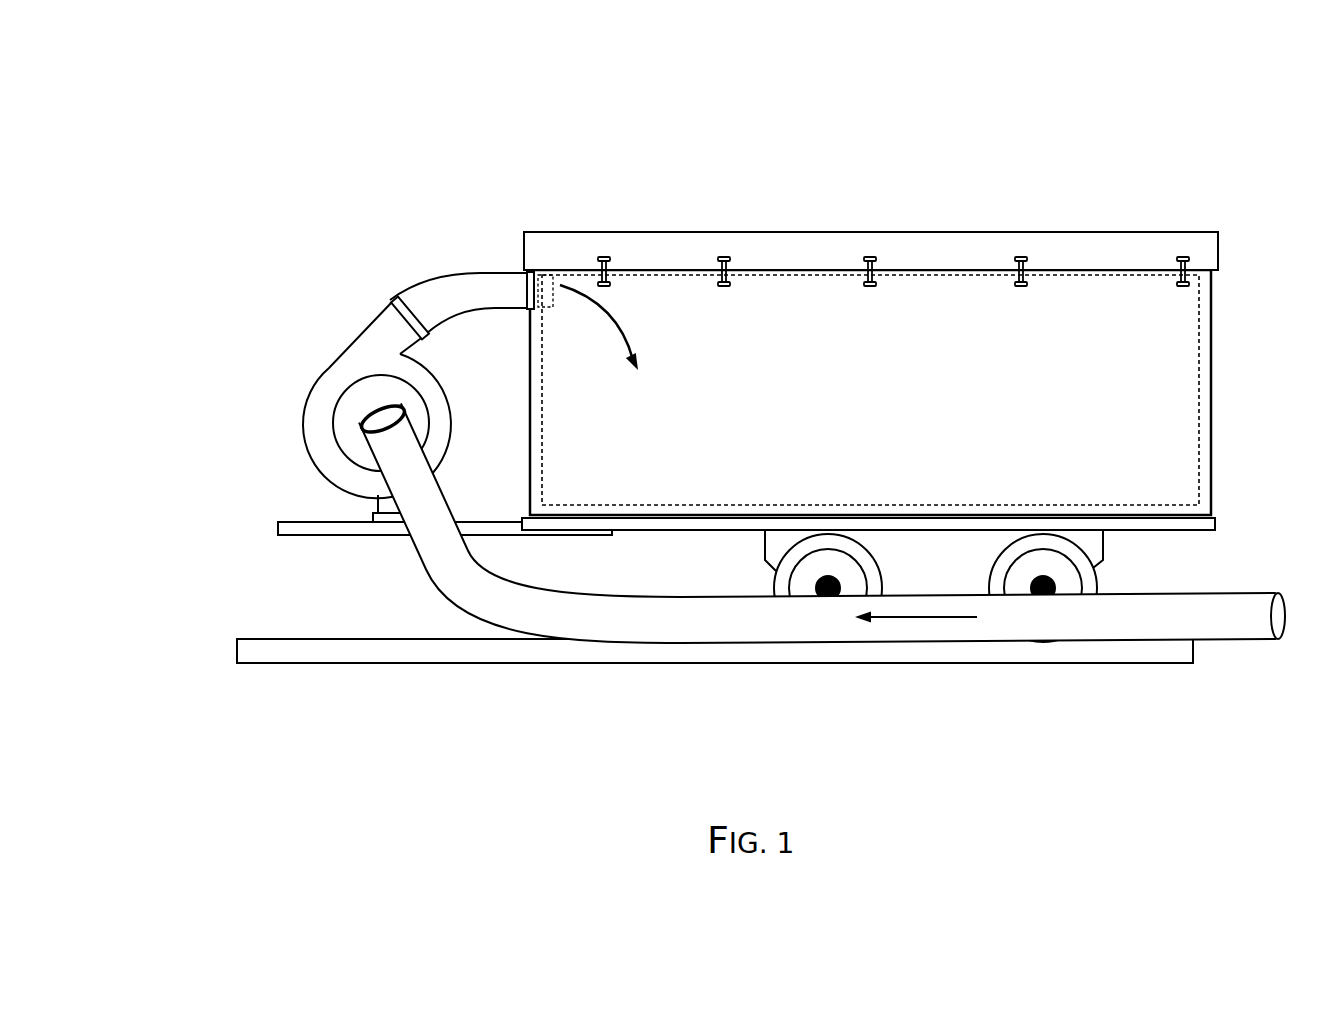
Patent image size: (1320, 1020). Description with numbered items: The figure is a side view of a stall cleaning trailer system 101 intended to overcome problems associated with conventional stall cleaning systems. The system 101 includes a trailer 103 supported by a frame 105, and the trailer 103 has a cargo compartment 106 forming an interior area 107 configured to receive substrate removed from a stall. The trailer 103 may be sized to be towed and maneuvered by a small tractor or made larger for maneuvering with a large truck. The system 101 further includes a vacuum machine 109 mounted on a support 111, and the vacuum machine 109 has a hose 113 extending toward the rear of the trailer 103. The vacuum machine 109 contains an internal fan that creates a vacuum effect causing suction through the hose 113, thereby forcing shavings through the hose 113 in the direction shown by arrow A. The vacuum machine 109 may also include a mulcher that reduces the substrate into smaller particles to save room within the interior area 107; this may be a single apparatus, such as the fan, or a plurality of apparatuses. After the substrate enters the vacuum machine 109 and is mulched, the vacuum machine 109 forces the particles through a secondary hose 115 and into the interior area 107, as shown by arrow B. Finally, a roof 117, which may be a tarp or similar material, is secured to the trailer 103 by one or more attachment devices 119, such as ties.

The stall cleaning trailer system 101 is at (232, 113).
The trailer 103 is at (624, 190).
The frame 105 is at (1193, 533).
The cargo compartment 106 is at (1202, 457).
The interior area 107 is at (1063, 284).
The vacuum machine 109 is at (312, 392).
The support 111 is at (292, 538).
The hose 113 is at (442, 582).
The secondary hose 115 is at (468, 273).
The roof 117 is at (782, 232).
The attachment devices 119 is at (877, 257).
The arrow A is at (937, 617).
The arrow B is at (622, 338).